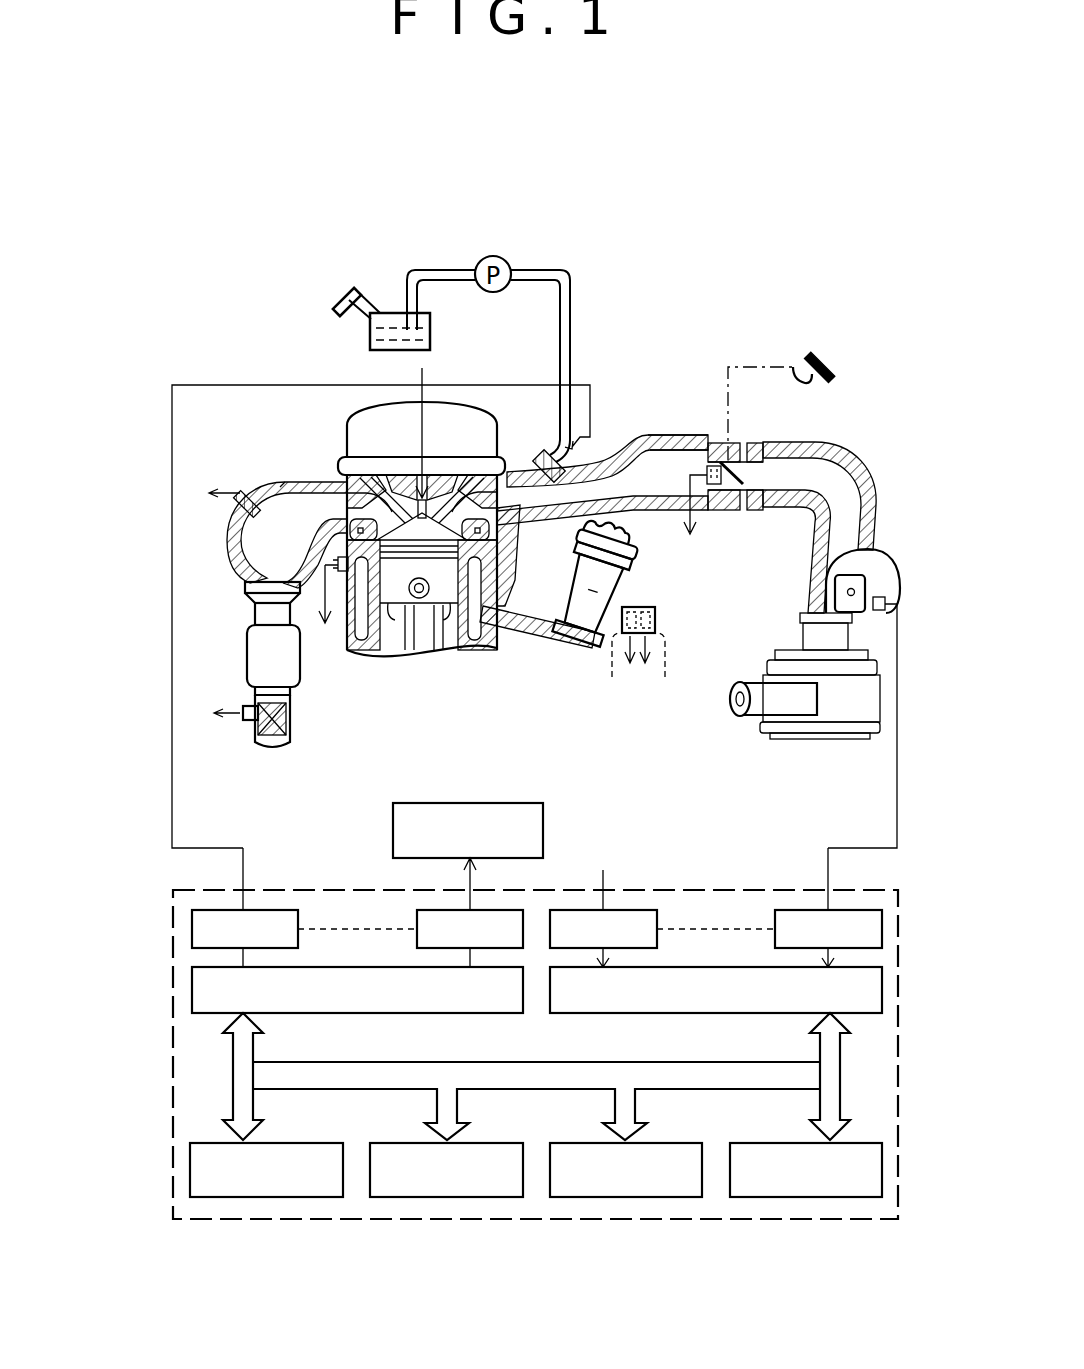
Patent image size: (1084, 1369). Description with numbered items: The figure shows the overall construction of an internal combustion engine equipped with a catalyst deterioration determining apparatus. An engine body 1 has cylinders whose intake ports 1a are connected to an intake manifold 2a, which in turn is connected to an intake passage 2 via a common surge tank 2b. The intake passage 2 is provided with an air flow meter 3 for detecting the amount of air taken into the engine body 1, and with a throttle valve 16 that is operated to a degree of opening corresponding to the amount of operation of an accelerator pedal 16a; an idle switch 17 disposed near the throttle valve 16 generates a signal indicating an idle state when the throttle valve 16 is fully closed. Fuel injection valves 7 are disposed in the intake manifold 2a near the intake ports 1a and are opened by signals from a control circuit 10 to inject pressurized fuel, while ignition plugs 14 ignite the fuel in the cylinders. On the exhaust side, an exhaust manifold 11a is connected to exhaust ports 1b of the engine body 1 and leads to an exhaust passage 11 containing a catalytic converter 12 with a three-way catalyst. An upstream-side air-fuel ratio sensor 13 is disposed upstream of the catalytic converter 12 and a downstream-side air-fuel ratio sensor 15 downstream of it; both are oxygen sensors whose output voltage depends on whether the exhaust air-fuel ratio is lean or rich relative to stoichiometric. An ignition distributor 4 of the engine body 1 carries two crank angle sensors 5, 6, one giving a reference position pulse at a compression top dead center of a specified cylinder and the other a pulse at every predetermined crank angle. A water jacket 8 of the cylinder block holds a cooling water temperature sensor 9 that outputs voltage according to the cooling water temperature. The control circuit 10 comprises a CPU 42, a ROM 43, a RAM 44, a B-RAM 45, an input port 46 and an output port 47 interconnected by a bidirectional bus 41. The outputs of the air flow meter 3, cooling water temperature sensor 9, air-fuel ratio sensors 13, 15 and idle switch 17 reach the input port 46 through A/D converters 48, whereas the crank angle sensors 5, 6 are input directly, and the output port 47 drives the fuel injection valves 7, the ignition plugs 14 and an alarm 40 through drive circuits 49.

The engine body 1 is at (456, 412).
The intake ports 1a is at (504, 530).
The exhaust ports 1b is at (357, 515).
The intake passage 2 is at (828, 443).
The intake manifold 2a is at (589, 466).
The common surge tank 2b is at (668, 435).
The air flow meter 3 is at (883, 557).
The ignition distributor 4 is at (636, 579).
The crank angle sensor 5 is at (620, 640).
The crank angle sensor 6 is at (653, 642).
The fuel injection valves 7 is at (543, 456).
The water jacket 8 is at (343, 574).
The cooling water temperature sensor 9 is at (322, 619).
The control circuit 10 is at (173, 1105).
The exhaust passage 11 is at (288, 718).
The exhaust manifold 11a is at (279, 484).
The catalytic converter 12 is at (247, 641).
The upstream-side air-fuel ratio sensor 13 is at (238, 491).
The ignition plugs 14 is at (420, 488).
The downstream-side air-fuel ratio sensor 15 is at (246, 708).
The throttle valve 16 is at (737, 508).
The accelerator pedal 16a is at (827, 355).
The idle switch 17 is at (698, 510).
The alarm 40 is at (543, 828).
The bidirectional bus 41 is at (497, 1062).
The CPU 42 is at (283, 1197).
The ROM 43 is at (447, 1197).
The RAM 44 is at (622, 1197).
The B-RAM 45 is at (805, 1197).
The input port 46 is at (697, 1013).
The output port 47 is at (377, 1013).
The A/D converters 48 is at (775, 910).
The drive circuits 49 is at (418, 910).